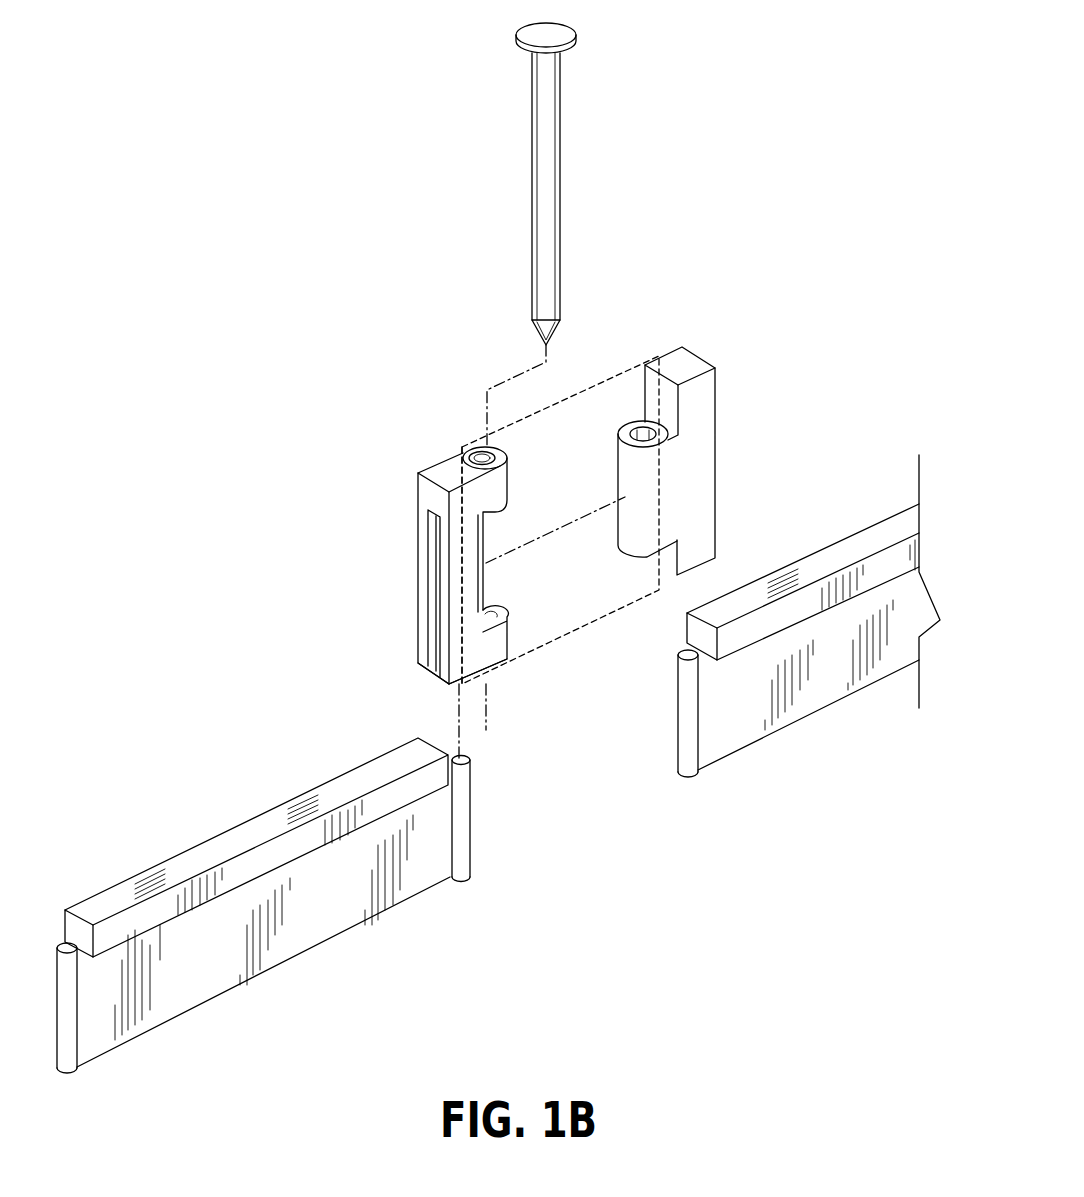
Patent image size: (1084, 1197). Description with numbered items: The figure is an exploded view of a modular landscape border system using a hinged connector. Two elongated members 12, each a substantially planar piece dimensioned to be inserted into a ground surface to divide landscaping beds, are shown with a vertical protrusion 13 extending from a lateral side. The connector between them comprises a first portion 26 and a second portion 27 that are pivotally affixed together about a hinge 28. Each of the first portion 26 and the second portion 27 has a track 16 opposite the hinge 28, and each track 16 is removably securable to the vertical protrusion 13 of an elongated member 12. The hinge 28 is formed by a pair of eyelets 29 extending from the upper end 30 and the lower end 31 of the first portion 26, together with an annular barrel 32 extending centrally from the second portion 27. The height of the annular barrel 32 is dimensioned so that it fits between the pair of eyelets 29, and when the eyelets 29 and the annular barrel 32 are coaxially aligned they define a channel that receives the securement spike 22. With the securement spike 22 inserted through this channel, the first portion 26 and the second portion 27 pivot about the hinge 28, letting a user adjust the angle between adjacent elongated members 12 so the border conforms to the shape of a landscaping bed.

The elongated member 12 is at (305, 893).
The vertical protrusion 13 is at (466, 812).
The track 16 is at (433, 570).
The securement spike 22 is at (550, 197).
The first portion 26 is at (426, 543).
The second portion 27 is at (703, 461).
The hinge 28 is at (603, 378).
The eyelets 29 is at (480, 452).
The upper end 30 is at (430, 550).
The lower end 31 is at (447, 683).
The annular barrel 32 is at (662, 472).